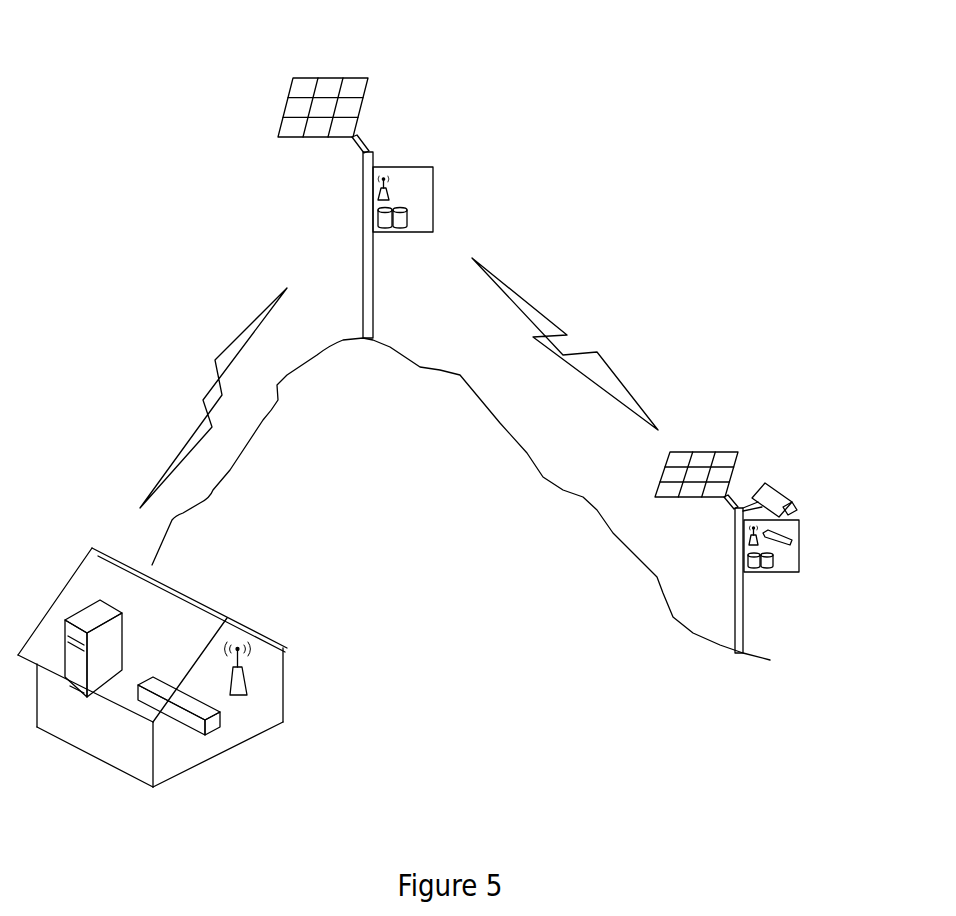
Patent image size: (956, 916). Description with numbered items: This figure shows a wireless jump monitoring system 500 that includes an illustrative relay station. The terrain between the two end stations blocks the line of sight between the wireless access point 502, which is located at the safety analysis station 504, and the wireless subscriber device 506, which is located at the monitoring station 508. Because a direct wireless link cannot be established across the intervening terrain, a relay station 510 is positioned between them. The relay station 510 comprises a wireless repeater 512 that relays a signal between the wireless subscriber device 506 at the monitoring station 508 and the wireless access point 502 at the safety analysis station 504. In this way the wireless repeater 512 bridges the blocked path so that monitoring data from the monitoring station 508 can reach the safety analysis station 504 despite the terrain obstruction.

The wireless jump monitoring system 500 is at (150, 116).
The wireless access point 502 is at (247, 683).
The safety analysis station 504 is at (160, 788).
The wireless subscriber device 506 is at (752, 540).
The monitoring station 508 is at (739, 434).
The relay station 510 is at (364, 60).
The wireless repeater 512 is at (378, 188).